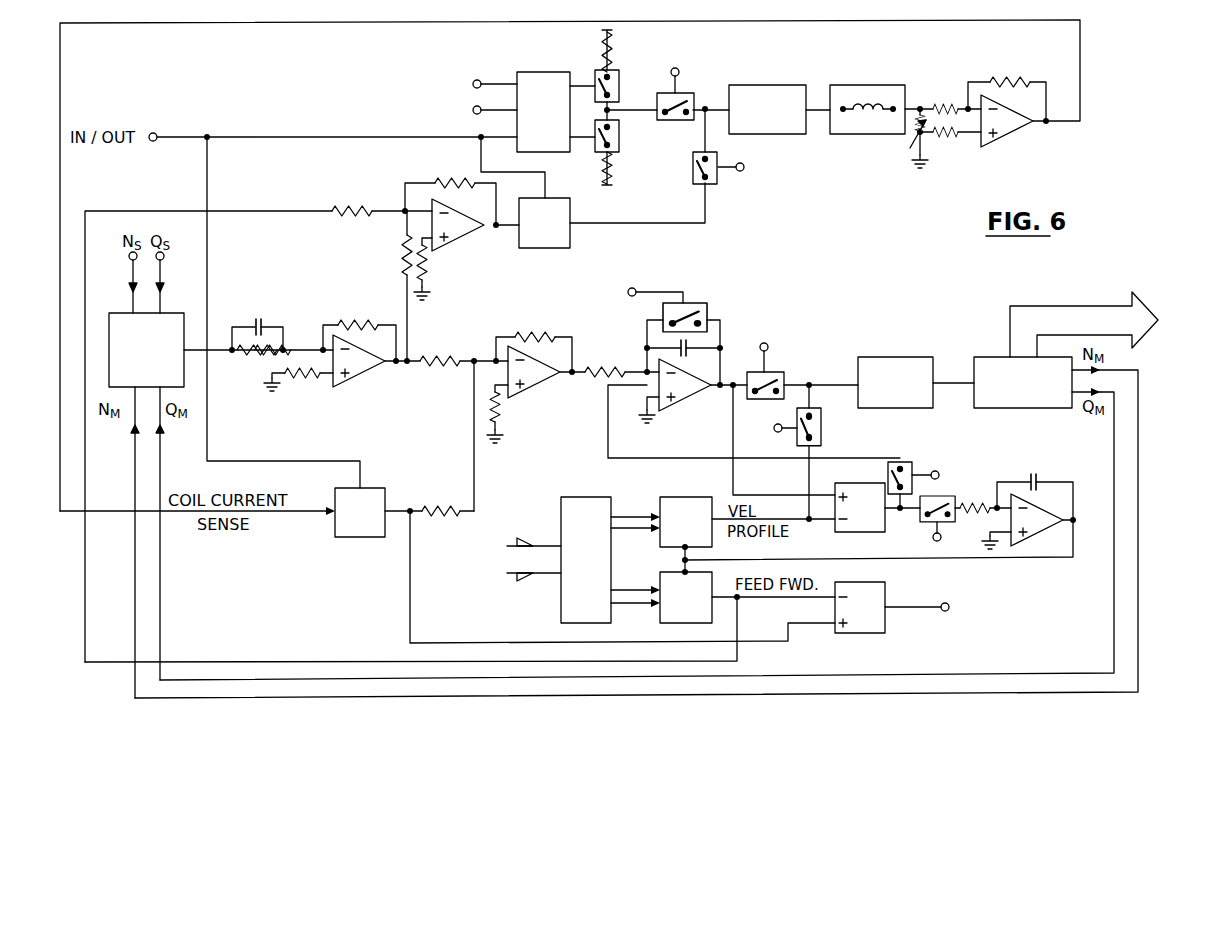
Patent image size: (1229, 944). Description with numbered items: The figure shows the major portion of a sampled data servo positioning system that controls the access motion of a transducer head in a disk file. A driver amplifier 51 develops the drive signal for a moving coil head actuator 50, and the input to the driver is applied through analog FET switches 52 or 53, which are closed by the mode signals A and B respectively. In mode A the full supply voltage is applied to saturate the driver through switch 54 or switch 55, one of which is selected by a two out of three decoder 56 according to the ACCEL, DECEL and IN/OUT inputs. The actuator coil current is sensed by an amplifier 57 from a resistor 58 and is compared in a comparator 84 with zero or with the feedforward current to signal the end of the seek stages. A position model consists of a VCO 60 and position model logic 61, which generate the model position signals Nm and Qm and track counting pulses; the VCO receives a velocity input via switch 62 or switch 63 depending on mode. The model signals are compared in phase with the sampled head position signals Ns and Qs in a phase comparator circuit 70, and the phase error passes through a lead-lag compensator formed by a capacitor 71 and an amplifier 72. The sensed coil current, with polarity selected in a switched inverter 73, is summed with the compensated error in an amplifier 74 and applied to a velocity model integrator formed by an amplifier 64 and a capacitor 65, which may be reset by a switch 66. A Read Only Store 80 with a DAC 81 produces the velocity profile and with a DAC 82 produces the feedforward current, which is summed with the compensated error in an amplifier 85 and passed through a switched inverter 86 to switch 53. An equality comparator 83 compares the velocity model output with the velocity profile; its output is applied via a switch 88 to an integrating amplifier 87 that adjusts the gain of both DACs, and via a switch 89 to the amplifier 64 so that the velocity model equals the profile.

The head actuator 50 is at (855, 85).
The driver amplifier 51 is at (763, 85).
The analog FET switch 52 is at (688, 93).
The analog FET switch 53 is at (712, 184).
The switch 54 is at (619, 88).
The switch 55 is at (619, 140).
The 2 out of 3 decoder 56 is at (537, 72).
The amplifier 57 is at (1005, 137).
The resistor 58 is at (933, 137).
The VCO 60 is at (893, 357).
The position model logic 61 is at (1015, 408).
The switch 62 is at (780, 372).
The switch 63 is at (821, 426).
The amplifier 64 is at (685, 403).
The capacitor 65 is at (688, 352).
The switch 66 is at (707, 311).
The phase comparator circuit 70 is at (172, 313).
The capacitor 71 is at (263, 322).
The amplifier 72 is at (360, 374).
The switched inverter 73 is at (367, 537).
The amplifier 74 is at (538, 392).
The Read Only Store 80 is at (580, 497).
The DAC 81 is at (680, 497).
The DAC 82 is at (660, 613).
The equality comparator 83 is at (850, 532).
The comparator 84 is at (845, 633).
The amplifier 85 is at (455, 238).
The switched inverter 86 is at (570, 242).
The amplifier 87 is at (1032, 540).
The switch 88 is at (925, 523).
The switch 89 is at (915, 466).